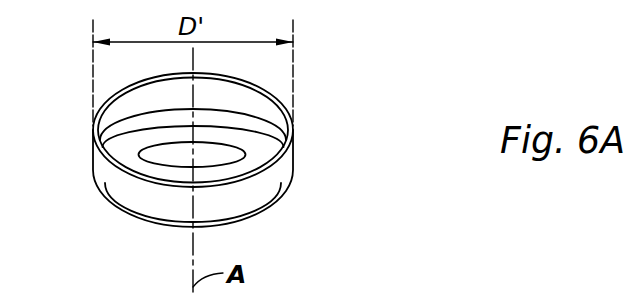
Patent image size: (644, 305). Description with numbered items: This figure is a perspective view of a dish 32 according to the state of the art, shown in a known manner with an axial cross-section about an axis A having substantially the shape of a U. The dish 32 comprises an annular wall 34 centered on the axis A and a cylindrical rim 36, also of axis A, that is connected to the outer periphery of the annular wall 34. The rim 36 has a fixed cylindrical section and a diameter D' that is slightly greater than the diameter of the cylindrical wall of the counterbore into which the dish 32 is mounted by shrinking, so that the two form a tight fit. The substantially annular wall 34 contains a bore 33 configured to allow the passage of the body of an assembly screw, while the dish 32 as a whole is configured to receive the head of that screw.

The dish 32 is at (322, 118).
The bore 33 is at (220, 150).
The annular wall 34 is at (135, 158).
The cylindrical rim 36 is at (272, 182).